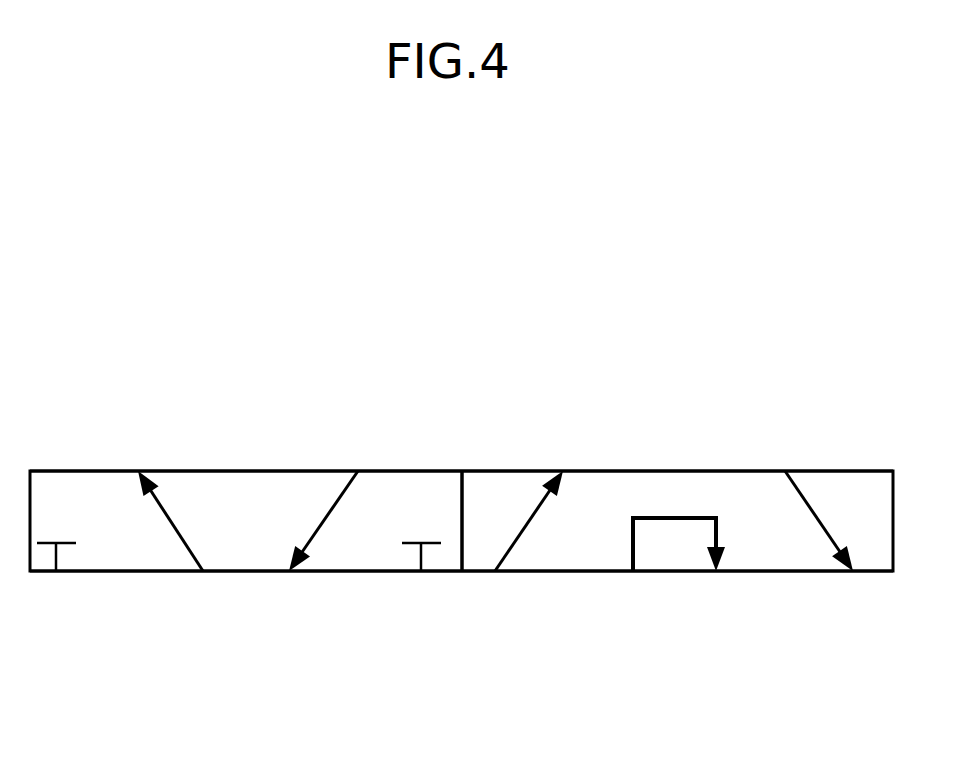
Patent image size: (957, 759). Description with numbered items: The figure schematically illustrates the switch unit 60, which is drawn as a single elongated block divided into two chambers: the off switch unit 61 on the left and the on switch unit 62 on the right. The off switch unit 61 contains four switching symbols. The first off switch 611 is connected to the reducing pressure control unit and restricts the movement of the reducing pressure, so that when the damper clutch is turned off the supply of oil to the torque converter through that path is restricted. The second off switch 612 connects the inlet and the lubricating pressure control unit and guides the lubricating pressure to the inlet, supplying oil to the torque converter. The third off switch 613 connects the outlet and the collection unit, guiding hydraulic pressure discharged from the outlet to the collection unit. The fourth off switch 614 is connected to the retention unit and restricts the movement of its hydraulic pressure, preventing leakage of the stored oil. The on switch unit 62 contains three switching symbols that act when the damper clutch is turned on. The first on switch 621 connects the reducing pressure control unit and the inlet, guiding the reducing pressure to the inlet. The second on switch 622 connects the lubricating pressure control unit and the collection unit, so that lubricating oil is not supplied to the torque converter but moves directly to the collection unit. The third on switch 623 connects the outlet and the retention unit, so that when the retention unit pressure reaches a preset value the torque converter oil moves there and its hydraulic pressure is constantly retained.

The switch unit 60 is at (864, 315).
The off switch unit 61 is at (442, 666).
The on switch unit 62 is at (835, 666).
The first off switch 611 is at (57, 557).
The second off switch 612 is at (183, 540).
The third off switch 613 is at (310, 540).
The fourth off switch 614 is at (421, 558).
The first on switch 621 is at (525, 530).
The second on switch 622 is at (633, 547).
The third on switch 623 is at (823, 530).